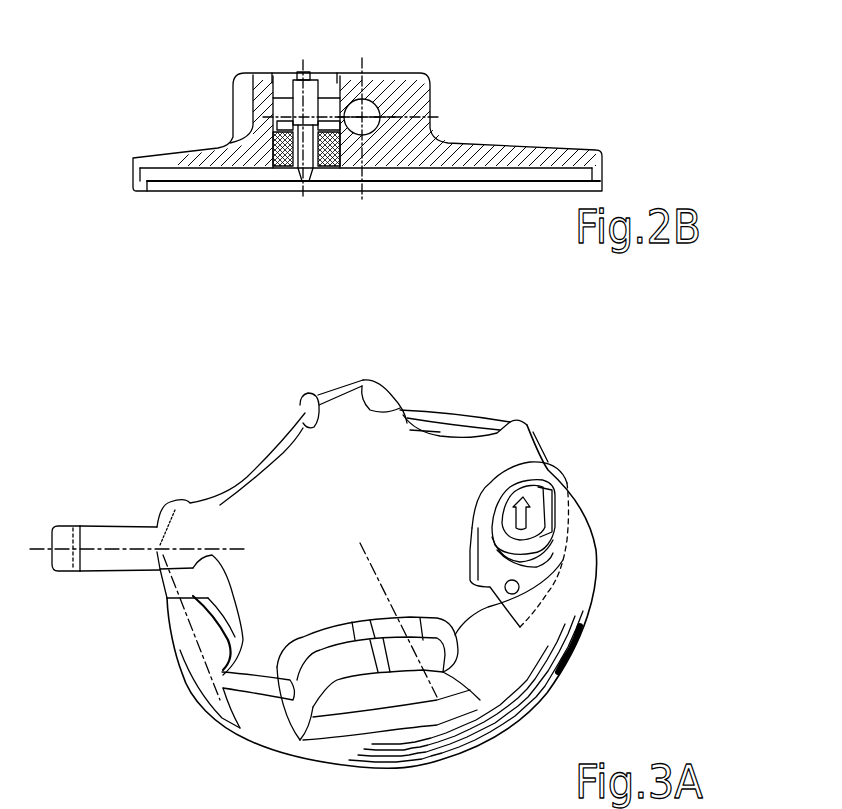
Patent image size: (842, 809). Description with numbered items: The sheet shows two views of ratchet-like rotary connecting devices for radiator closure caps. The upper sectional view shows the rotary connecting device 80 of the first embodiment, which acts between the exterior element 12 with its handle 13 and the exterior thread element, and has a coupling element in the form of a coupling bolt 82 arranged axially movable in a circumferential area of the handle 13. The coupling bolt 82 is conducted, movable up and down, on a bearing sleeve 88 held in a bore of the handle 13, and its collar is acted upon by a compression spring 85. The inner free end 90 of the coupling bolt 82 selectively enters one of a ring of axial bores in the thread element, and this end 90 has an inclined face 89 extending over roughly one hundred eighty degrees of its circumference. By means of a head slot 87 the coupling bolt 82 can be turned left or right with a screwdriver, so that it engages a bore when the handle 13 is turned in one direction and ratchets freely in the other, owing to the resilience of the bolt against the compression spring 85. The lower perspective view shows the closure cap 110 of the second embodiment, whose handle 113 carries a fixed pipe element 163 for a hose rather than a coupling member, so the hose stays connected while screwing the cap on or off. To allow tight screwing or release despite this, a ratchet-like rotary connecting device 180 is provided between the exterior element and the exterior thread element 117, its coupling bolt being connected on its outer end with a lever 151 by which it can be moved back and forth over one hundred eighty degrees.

In FIG. 2B, the exterior element 12 is at (497, 92).
In FIG. 2B, the handle 13 is at (412, 90).
In FIG. 2B, the rotary connecting device 80 is at (274, 64).
In FIG. 2B, the coupling bolt 82 is at (339, 68).
In FIG. 2B, the compression spring 85 is at (287, 110).
In FIG. 2B, the head slot 87 is at (303, 72).
In FIG. 2B, the bearing sleeve 88 is at (283, 168).
In FIG. 2B, the inclined face 89 is at (318, 168).
In FIG. 2B, the inner free end 90 is at (303, 183).
In FIG. 3A, the closure cap 110 is at (238, 430).
In FIG. 3A, the handle 113 is at (440, 470).
In FIG. 3A, the exterior thread element 117 is at (503, 717).
In FIG. 3A, the lever 151 is at (523, 538).
In FIG. 3A, the pipe element 163 is at (105, 537).
In FIG. 3A, the rotary connecting device 180 is at (561, 516).